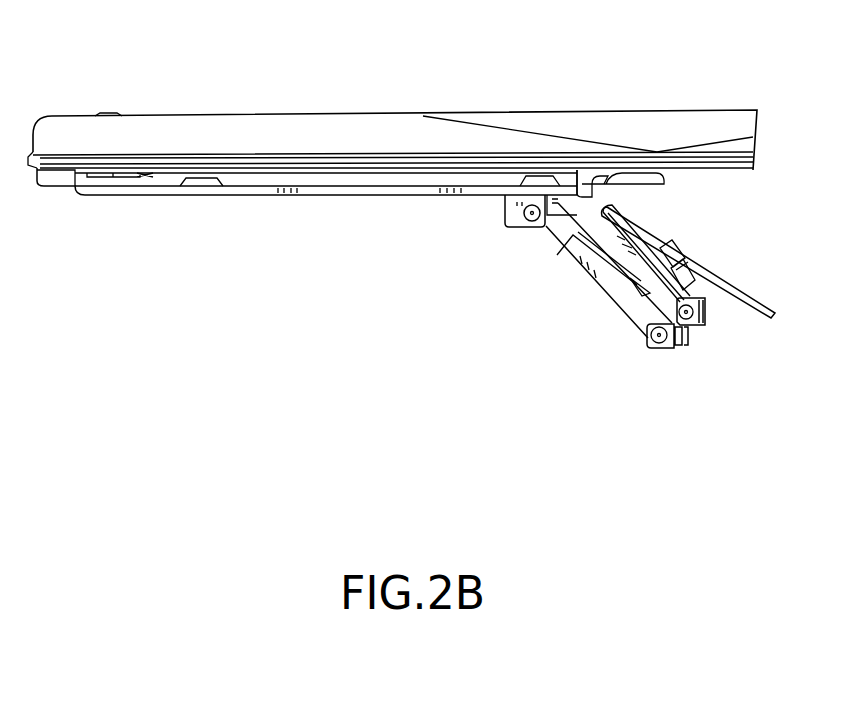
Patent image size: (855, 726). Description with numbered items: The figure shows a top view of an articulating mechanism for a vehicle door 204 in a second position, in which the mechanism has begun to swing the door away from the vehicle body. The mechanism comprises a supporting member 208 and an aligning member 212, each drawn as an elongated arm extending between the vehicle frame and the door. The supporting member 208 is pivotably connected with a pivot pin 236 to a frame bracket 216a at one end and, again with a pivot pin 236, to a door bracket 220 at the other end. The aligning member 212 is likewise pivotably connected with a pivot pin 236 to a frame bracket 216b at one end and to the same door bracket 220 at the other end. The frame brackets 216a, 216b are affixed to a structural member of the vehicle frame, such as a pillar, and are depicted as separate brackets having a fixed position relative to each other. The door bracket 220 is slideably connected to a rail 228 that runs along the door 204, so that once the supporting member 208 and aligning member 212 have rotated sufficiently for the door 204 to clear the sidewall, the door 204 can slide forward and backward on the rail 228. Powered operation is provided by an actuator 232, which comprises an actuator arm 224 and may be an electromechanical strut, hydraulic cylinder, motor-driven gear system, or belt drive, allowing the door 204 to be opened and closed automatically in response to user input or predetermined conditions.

The vehicle door 204 is at (425, 118).
The rail 228 is at (338, 197).
The door bracket 220 is at (513, 224).
The supporting member 208 is at (620, 306).
The aligning member 212 is at (598, 228).
The frame bracket 216a is at (666, 348).
The frame bracket 216b is at (710, 318).
The actuator 232 is at (670, 249).
The actuator arm 224 is at (724, 283).
The pivot pin 236 is at (523, 213).